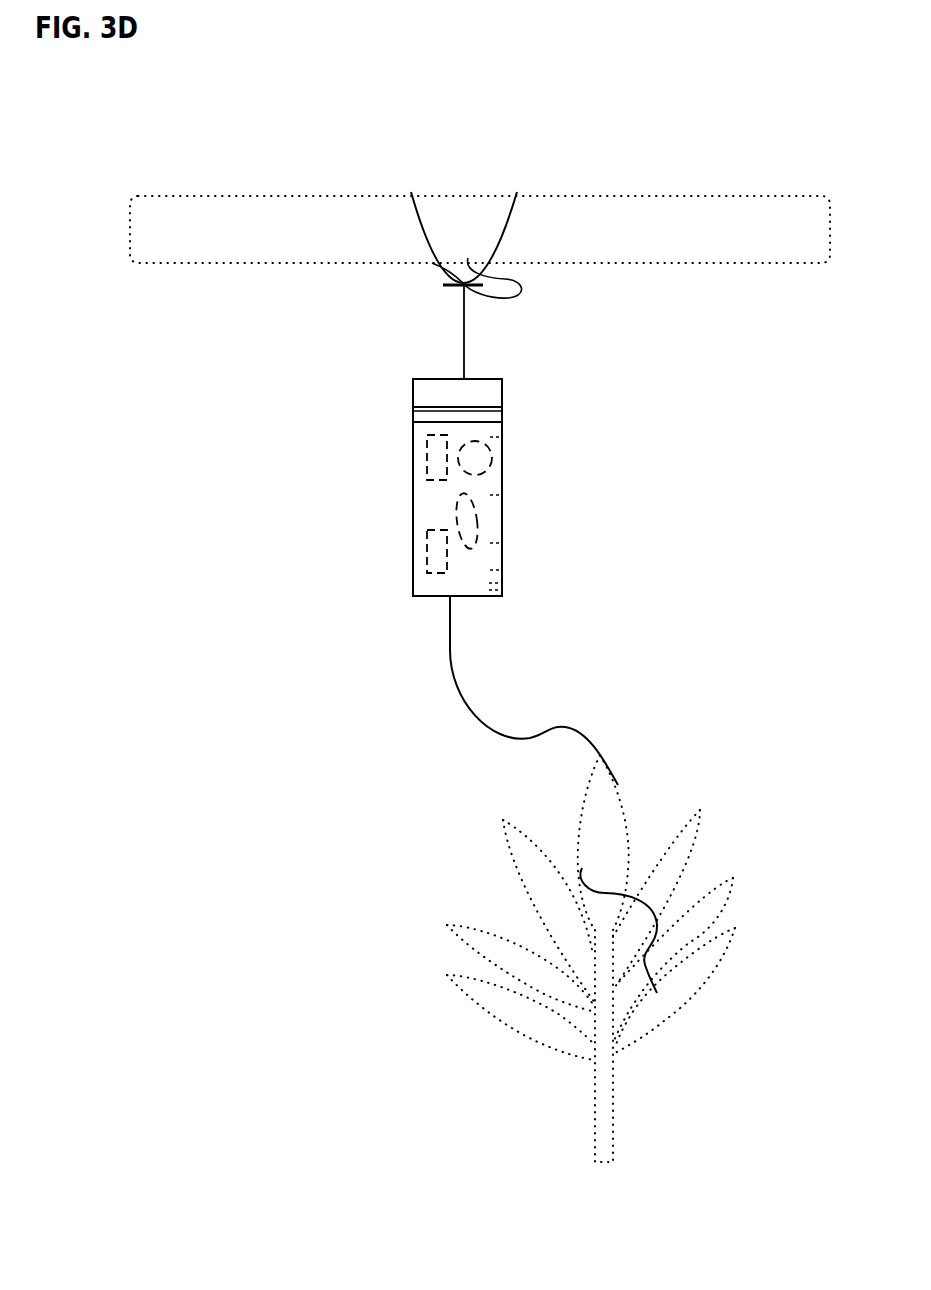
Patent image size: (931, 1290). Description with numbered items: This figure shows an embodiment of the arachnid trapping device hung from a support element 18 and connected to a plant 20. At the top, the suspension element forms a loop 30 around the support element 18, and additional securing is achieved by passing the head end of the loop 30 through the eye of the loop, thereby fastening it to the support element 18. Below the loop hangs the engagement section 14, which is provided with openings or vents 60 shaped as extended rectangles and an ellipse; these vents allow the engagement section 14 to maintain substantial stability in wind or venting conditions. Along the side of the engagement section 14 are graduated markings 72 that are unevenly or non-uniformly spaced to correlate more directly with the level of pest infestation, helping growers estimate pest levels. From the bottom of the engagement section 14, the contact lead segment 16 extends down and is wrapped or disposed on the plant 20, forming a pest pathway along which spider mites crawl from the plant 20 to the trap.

The engagement section 14 is at (502, 456).
The contact lead segment 16 is at (456, 650).
The support element 18 is at (128, 243).
The plant 20 is at (503, 820).
The loop 30 is at (523, 287).
The openings or vents 60 is at (458, 507).
The graduated markings 72 is at (502, 543).